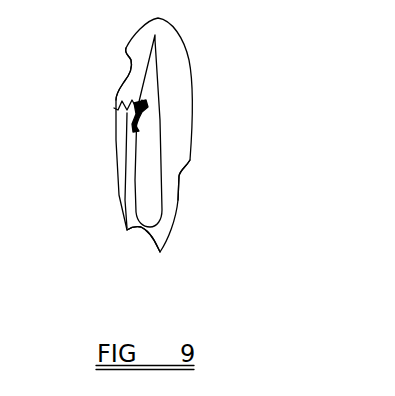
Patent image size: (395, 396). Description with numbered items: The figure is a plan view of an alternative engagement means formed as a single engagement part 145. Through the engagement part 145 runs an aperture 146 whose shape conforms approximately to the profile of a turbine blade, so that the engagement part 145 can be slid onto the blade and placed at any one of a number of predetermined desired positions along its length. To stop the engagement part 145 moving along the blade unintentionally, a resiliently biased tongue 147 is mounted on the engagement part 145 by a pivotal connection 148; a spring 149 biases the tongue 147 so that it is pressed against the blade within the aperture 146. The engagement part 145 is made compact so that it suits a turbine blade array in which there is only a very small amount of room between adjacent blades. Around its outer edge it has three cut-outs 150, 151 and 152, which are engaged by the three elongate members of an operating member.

The engagement part 145 is at (113, 136).
The aperture 146 is at (145, 83).
The resiliently biased tongue 147 is at (137, 121).
The pivotal connection 148 is at (133, 131).
The spring 149 is at (124, 147).
The cut-out 150 is at (137, 233).
The cut-out 151 is at (126, 79).
The cut-out 152 is at (186, 172).